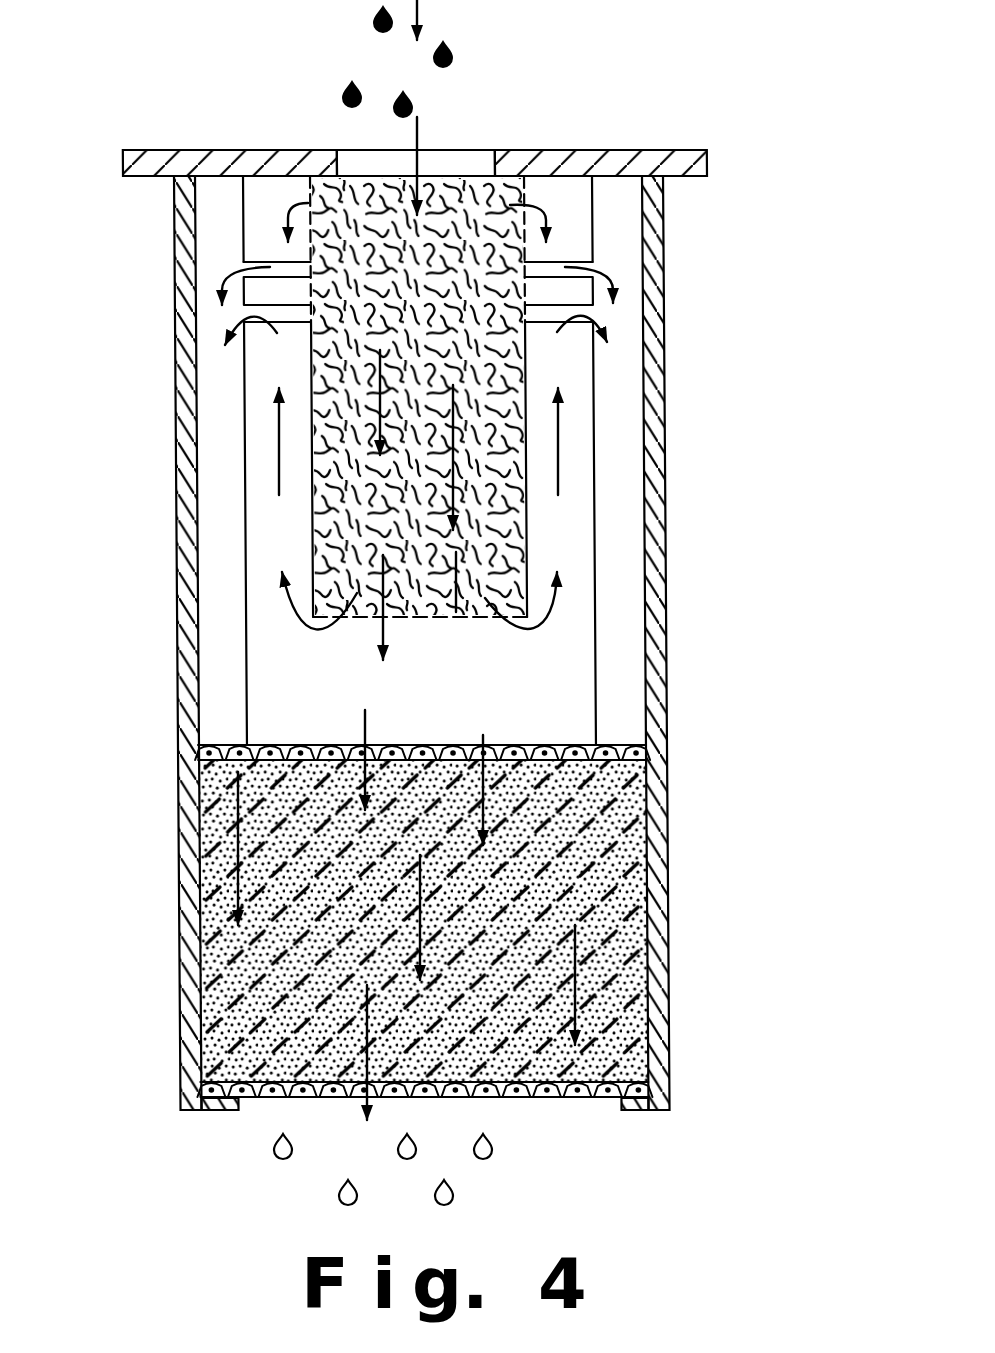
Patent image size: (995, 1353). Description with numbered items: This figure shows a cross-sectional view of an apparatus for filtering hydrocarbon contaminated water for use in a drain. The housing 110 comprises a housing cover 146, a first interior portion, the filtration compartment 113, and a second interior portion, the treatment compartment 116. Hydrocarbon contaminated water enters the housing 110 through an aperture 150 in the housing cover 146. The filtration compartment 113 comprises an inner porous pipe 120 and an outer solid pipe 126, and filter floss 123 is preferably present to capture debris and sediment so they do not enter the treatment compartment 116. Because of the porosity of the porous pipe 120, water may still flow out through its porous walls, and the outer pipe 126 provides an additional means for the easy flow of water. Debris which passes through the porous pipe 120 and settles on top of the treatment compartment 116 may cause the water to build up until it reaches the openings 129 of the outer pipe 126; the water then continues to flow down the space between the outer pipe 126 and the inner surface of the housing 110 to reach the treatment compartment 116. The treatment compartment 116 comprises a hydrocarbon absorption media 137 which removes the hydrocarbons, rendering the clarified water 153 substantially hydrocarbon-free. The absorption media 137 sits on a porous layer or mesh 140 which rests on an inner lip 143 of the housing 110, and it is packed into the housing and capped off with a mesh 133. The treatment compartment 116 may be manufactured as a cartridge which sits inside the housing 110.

The housing 110 is at (174, 442).
The filtration compartment 113 is at (613, 232).
The treatment compartment 116 is at (655, 838).
The inner porous pipe 120 is at (527, 520).
The filter floss 123 is at (350, 520).
The outer solid pipe 126 is at (243, 400).
The openings 129 is at (283, 266).
The mesh 133 is at (647, 752).
The hydrocarbon absorption media 137 is at (232, 975).
The porous layer or mesh 140 is at (667, 1098).
The inner lip 143 is at (188, 1110).
The housing cover 146 is at (632, 150).
The aperture 150 is at (447, 165).
The clarified water 153 is at (557, 1112).